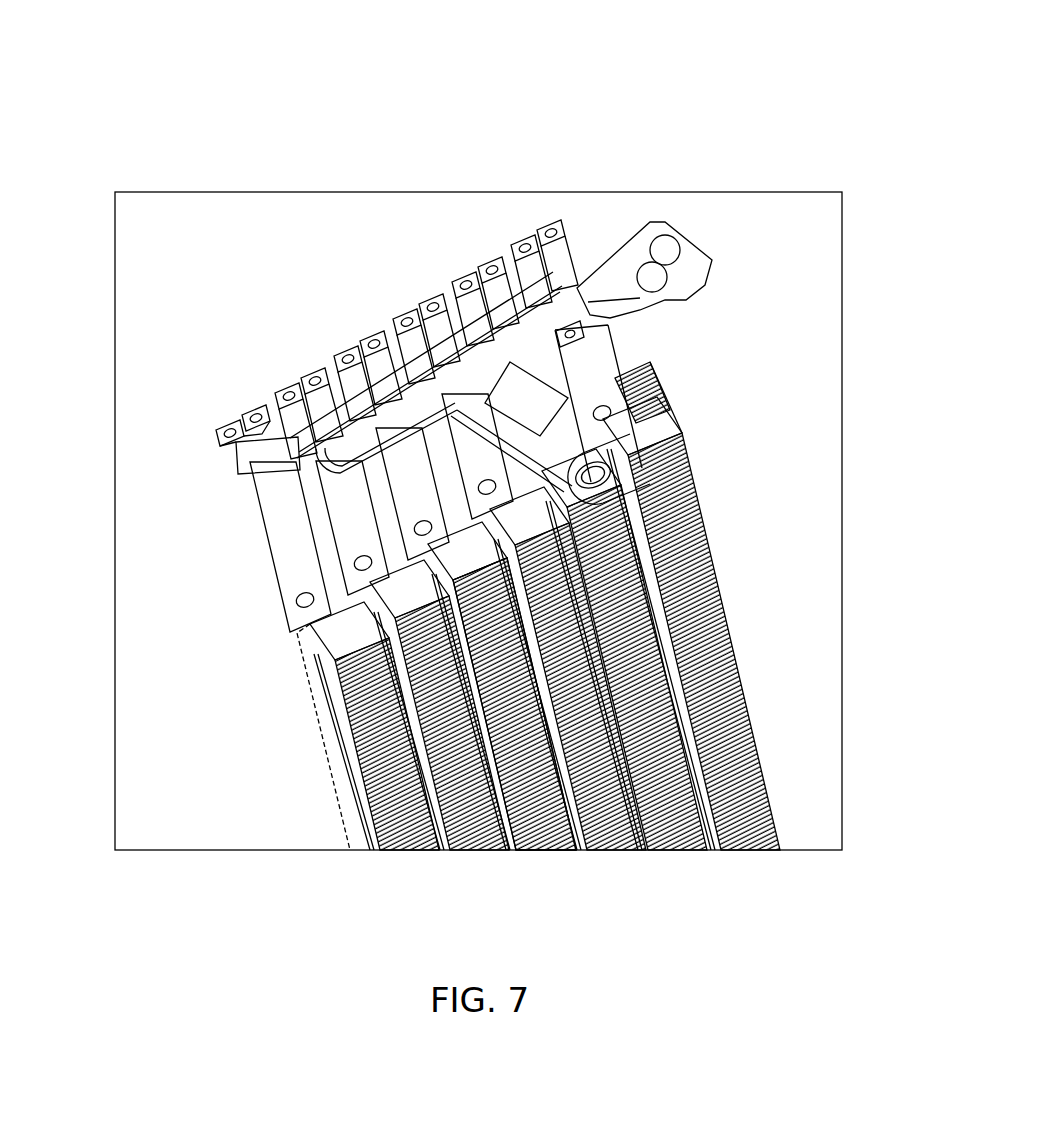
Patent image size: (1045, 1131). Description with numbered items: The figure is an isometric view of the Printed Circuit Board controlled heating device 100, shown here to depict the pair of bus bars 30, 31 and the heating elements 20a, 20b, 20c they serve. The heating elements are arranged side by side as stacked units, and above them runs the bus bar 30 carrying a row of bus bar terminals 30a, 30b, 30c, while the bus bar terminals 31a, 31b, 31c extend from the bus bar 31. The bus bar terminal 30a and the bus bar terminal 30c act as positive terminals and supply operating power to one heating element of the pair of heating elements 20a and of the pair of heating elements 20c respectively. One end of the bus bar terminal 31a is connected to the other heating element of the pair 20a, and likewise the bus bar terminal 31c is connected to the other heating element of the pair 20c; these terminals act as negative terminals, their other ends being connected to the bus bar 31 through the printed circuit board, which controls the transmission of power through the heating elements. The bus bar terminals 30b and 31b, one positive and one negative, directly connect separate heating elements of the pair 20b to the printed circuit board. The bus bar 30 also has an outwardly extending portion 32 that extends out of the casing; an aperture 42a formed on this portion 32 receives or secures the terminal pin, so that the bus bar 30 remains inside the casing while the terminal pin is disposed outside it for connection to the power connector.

The heating device 100 is at (746, 157).
The heating element 20a is at (440, 735).
The heating element 20b is at (535, 815).
The heating element 20c is at (650, 625).
The bus bar 30 is at (323, 450).
The bus bar terminal 30a is at (493, 418).
The bus bar terminal 30b is at (449, 378).
The bus bar terminal 30c is at (545, 388).
The bus bar 31 is at (590, 317).
The bus bar terminal 31a is at (233, 452).
The bus bar terminal 31b is at (380, 384).
The bus bar terminal 31c is at (577, 267).
The portion of the bus bar 32 is at (350, 527).
The aperture 42a is at (592, 472).